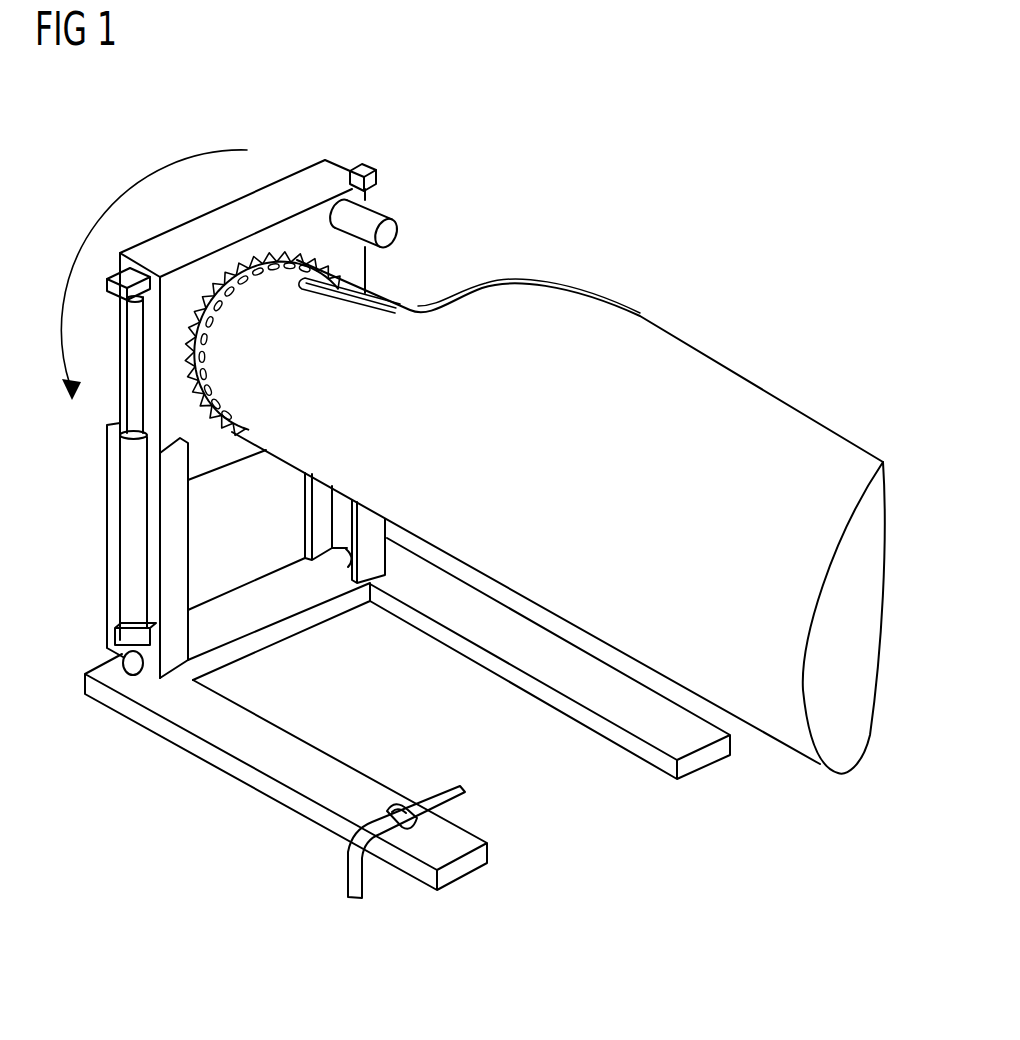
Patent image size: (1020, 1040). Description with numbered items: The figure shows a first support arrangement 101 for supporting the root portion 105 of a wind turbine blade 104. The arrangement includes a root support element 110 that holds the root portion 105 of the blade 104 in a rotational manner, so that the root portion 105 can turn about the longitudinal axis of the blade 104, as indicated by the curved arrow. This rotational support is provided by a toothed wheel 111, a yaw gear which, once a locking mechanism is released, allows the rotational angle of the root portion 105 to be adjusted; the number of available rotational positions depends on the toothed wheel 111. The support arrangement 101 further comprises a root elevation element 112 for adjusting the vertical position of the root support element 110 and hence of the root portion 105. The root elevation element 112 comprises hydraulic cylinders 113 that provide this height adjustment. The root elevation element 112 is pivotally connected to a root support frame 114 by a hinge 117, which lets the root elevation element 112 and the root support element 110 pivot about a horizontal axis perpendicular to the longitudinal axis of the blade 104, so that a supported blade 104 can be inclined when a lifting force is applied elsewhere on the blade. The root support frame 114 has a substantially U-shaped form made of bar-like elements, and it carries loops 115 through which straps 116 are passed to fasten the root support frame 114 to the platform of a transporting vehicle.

The first support arrangement 101 is at (108, 163).
The wind turbine blade 104 is at (783, 732).
The root portion 105 is at (343, 292).
The root support element 110 is at (299, 186).
The toothed wheel 111 is at (243, 258).
The root elevation element 112 is at (113, 592).
The hydraulic cylinders 113 is at (131, 536).
The root support frame 114 is at (257, 782).
The loops 115 is at (400, 806).
The straps 116 is at (350, 876).
The hinge 117 is at (130, 654).